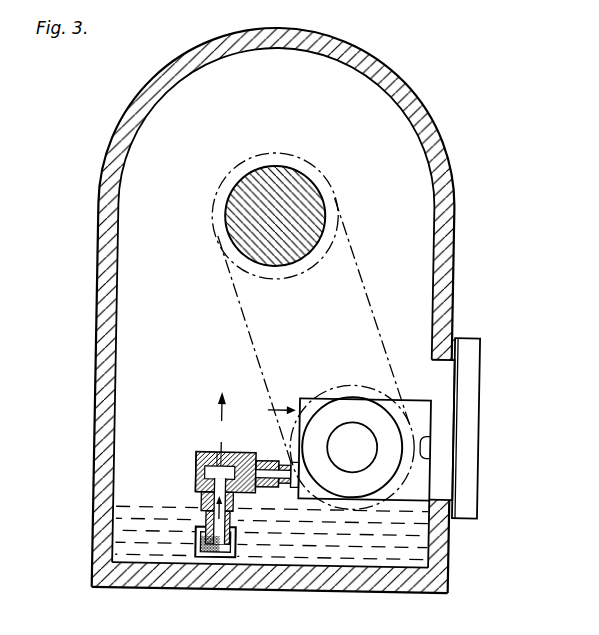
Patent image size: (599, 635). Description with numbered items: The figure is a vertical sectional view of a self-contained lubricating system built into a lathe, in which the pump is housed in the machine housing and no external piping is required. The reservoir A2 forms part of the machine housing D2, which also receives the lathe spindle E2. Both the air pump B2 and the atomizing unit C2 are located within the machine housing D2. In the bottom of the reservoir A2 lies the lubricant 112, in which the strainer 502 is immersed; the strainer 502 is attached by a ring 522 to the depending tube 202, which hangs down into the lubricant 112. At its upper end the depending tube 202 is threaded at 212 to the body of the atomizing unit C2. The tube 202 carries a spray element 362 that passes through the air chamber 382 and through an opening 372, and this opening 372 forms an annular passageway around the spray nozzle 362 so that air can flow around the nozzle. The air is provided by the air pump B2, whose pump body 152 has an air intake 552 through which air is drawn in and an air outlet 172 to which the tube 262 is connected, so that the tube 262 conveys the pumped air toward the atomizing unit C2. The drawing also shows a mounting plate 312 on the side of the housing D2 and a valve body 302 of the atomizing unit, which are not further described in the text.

The machine housing D2 is at (95, 256).
The reservoir A2 is at (95, 541).
The lubricant 112 is at (165, 554).
The mounting plate 312 is at (472, 367).
The depending tube 202 is at (271, 532).
The air pump B2 is at (401, 441).
The air intake 552 is at (307, 404).
The pump body 152 is at (394, 432).
The air outlet 172 is at (312, 490).
The lathe spindle E2 is at (303, 197).
The opening 372 is at (238, 456).
The tube 262 is at (285, 485).
The atomizing unit C2 is at (213, 475).
The valve body 302 is at (197, 458).
The air chamber 382 is at (206, 471).
The ring 522 is at (235, 533).
The strainer 502 is at (238, 543).
The threaded connection 212 is at (198, 487).
The spray element 362 is at (226, 422).